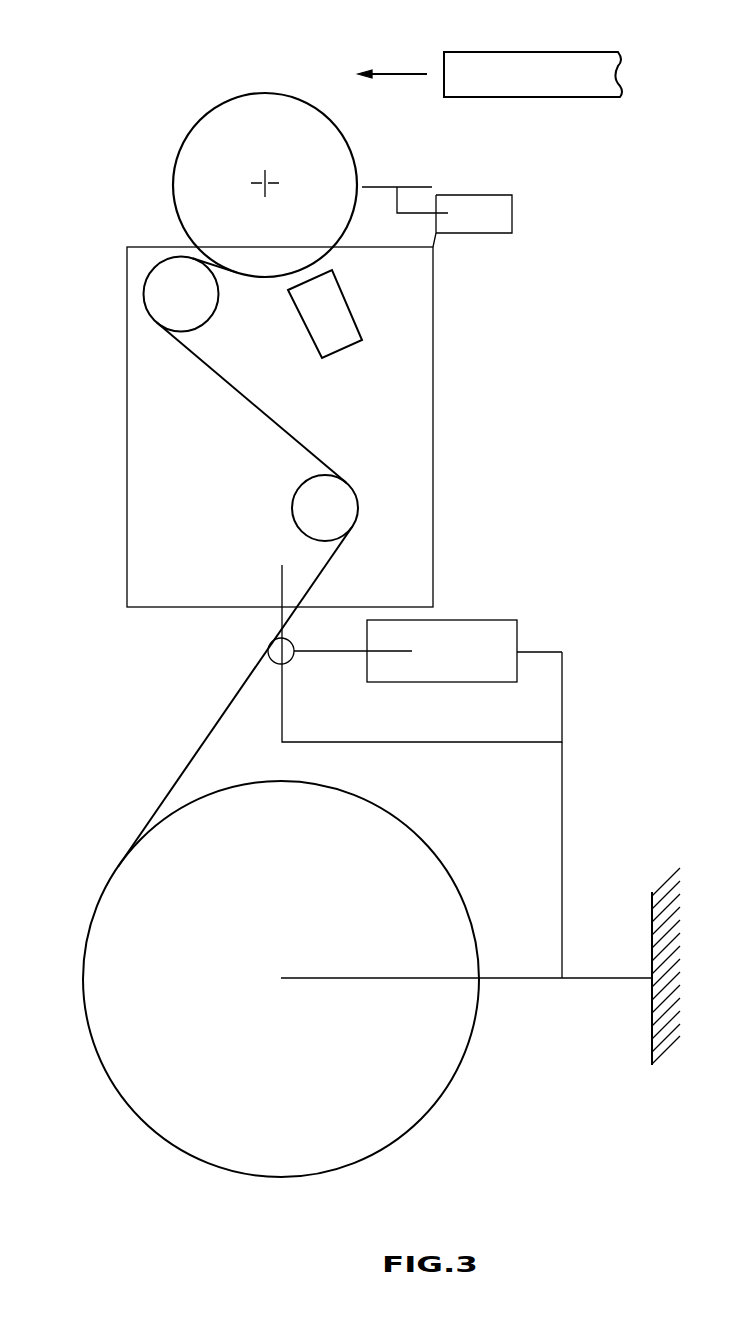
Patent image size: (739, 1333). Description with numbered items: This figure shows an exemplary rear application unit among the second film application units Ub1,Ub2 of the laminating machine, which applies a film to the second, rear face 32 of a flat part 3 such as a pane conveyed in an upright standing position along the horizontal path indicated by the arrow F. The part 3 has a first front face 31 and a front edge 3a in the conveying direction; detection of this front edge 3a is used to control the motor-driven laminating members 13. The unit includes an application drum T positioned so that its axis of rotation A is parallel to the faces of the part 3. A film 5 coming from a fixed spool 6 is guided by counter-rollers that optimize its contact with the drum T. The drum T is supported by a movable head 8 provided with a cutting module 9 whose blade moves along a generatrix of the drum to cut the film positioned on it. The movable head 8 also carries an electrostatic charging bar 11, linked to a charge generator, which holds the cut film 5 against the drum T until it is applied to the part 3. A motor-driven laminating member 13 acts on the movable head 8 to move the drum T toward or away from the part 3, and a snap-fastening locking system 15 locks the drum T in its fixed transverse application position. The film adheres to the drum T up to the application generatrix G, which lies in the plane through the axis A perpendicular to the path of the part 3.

The application generatrix G is at (262, 93).
The application drum T is at (178, 183).
The axis of rotation A is at (271, 184).
The flat part 3 is at (567, 60).
The front face 31 is at (487, 52).
The rear face 32 is at (527, 97).
The front edge 3a is at (444, 88).
The conveying direction arrow F is at (392, 62).
The cutting module 9 is at (509, 213).
The movable head 8 is at (433, 527).
The electrostatic charging bar 11 is at (340, 308).
The film 5 is at (170, 770).
The locking system 15 is at (268, 660).
The motor-driven laminating member 13 is at (483, 632).
The fixed spool 6 is at (132, 1096).
The second (rear) film application units Ub1,Ub2 is at (566, 1093).